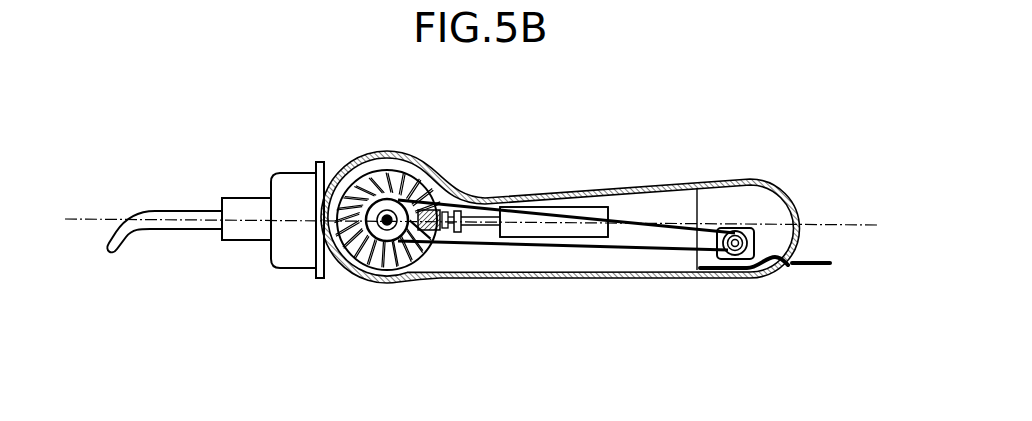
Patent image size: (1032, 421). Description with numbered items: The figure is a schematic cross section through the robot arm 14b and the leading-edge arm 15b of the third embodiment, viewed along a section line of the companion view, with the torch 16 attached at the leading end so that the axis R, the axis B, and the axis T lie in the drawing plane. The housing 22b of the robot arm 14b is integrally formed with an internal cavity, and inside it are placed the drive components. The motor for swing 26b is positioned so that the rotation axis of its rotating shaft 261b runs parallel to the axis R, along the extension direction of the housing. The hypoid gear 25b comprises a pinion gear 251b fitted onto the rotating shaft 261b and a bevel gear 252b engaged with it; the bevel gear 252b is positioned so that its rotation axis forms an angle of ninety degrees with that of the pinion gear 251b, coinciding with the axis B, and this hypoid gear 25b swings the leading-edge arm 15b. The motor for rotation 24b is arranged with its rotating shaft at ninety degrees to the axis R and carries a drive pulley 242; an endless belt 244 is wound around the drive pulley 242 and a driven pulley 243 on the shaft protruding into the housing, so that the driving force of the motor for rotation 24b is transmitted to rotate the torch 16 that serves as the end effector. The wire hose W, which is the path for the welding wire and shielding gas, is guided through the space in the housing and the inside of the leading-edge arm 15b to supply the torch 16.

The leading-edge arm 15b is at (330, 145).
The axis B is at (387, 220).
The torch 16 is at (240, 198).
The rotating shaft 261b is at (482, 212).
The endless belt 244 is at (558, 207).
The robot arm 14b is at (577, 214).
The housing 22b is at (678, 190).
The drive pulley 242 is at (735, 228).
The motor for rotation 24b is at (755, 226).
The axis R is at (813, 223).
The axis T is at (97, 222).
The driven pulley 243 is at (372, 226).
The bevel gear 252b is at (378, 262).
The pinion gear 251b is at (440, 222).
The hypoid gear 25b is at (366, 229).
The motor for swing 26b is at (580, 237).
The wire hose W is at (807, 268).